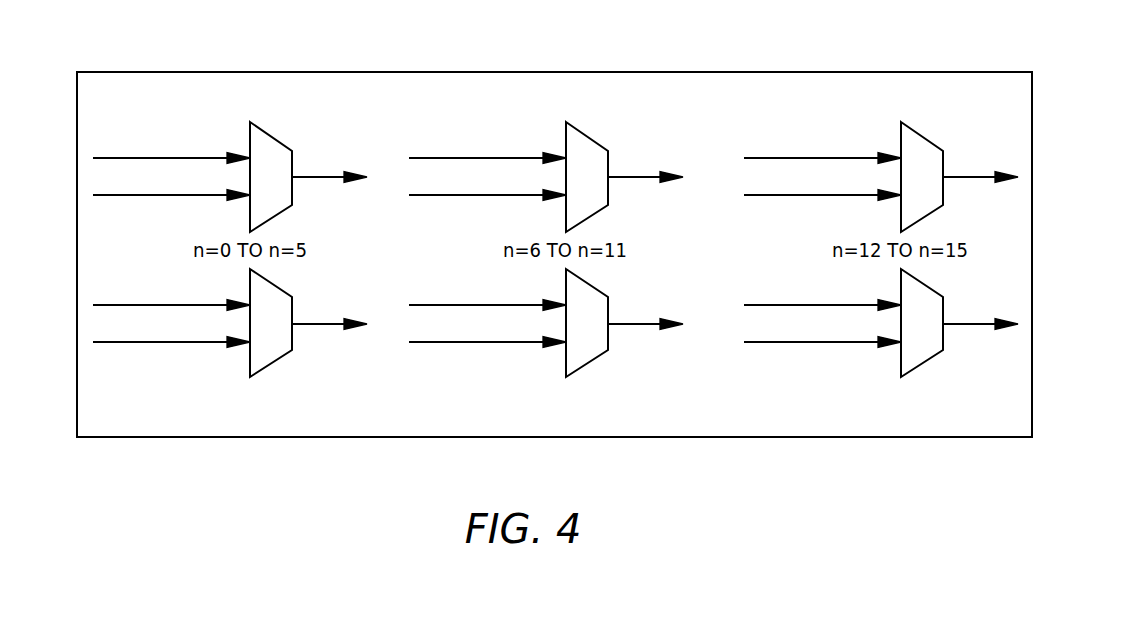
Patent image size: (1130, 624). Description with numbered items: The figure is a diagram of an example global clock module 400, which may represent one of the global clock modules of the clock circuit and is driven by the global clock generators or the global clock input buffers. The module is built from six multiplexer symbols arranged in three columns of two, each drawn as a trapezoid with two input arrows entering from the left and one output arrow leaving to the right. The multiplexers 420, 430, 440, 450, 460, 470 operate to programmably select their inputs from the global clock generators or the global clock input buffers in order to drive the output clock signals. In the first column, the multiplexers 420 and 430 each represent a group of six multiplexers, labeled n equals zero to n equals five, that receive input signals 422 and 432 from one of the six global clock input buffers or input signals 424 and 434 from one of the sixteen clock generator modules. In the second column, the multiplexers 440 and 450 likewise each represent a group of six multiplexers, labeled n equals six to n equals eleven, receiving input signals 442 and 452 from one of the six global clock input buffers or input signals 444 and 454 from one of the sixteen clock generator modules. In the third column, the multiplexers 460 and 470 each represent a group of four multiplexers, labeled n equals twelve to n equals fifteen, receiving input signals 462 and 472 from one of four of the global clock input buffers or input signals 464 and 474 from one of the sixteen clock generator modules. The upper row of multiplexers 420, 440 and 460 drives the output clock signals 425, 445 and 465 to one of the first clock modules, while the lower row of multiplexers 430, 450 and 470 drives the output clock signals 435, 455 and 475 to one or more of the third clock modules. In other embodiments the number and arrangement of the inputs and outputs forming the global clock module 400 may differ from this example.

The global clock module 400 is at (985, 48).
The multiplexer 420 is at (272, 132).
The input signal 422 is at (170, 156).
The input signal 424 is at (170, 197).
The output clock signal 425 is at (328, 175).
The multiplexer 430 is at (272, 363).
The input signal 432 is at (170, 303).
The input signal 434 is at (170, 344).
The output clock signal 435 is at (328, 322).
The multiplexer 440 is at (588, 132).
The input signal 442 is at (486, 156).
The input signal 444 is at (486, 197).
The output clock signal 445 is at (644, 175).
The multiplexer 450 is at (588, 363).
The input signal 452 is at (486, 303).
The input signal 454 is at (486, 344).
The output clock signal 455 is at (644, 322).
The multiplexer 460 is at (923, 132).
The input signal 462 is at (821, 156).
The input signal 464 is at (821, 197).
The output clock signal 465 is at (979, 175).
The multiplexer 470 is at (923, 363).
The input signal 472 is at (821, 303).
The input signal 474 is at (821, 344).
The output clock signal 475 is at (979, 322).